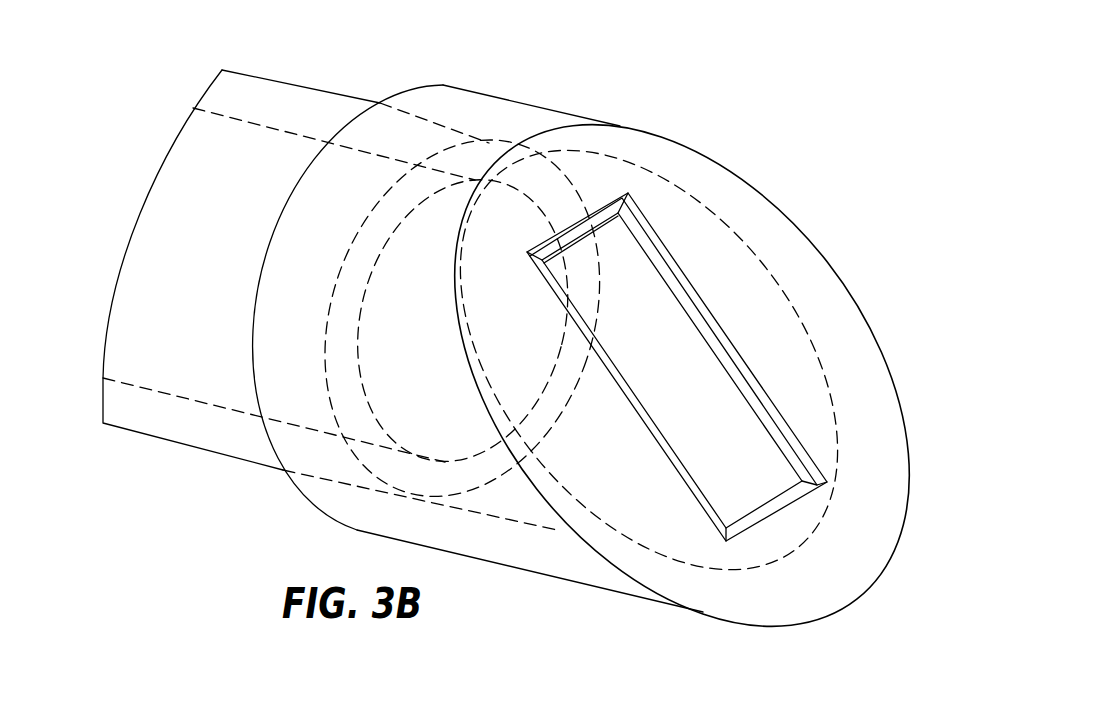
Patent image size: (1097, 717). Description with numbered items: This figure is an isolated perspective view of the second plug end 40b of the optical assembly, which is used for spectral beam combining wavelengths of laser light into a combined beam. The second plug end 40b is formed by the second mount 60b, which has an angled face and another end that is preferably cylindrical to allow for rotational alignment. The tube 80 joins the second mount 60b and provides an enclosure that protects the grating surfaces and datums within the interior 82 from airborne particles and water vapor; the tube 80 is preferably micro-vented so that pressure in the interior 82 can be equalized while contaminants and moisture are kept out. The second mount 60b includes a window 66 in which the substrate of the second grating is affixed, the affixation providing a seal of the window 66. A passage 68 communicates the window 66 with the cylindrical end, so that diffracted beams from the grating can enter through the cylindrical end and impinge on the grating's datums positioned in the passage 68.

The tube 80 is at (253, 75).
The interior 82 is at (306, 141).
The second mount 60b is at (527, 104).
The second plug end 40b is at (807, 197).
The window 66 is at (684, 338).
The passage 68 is at (537, 518).